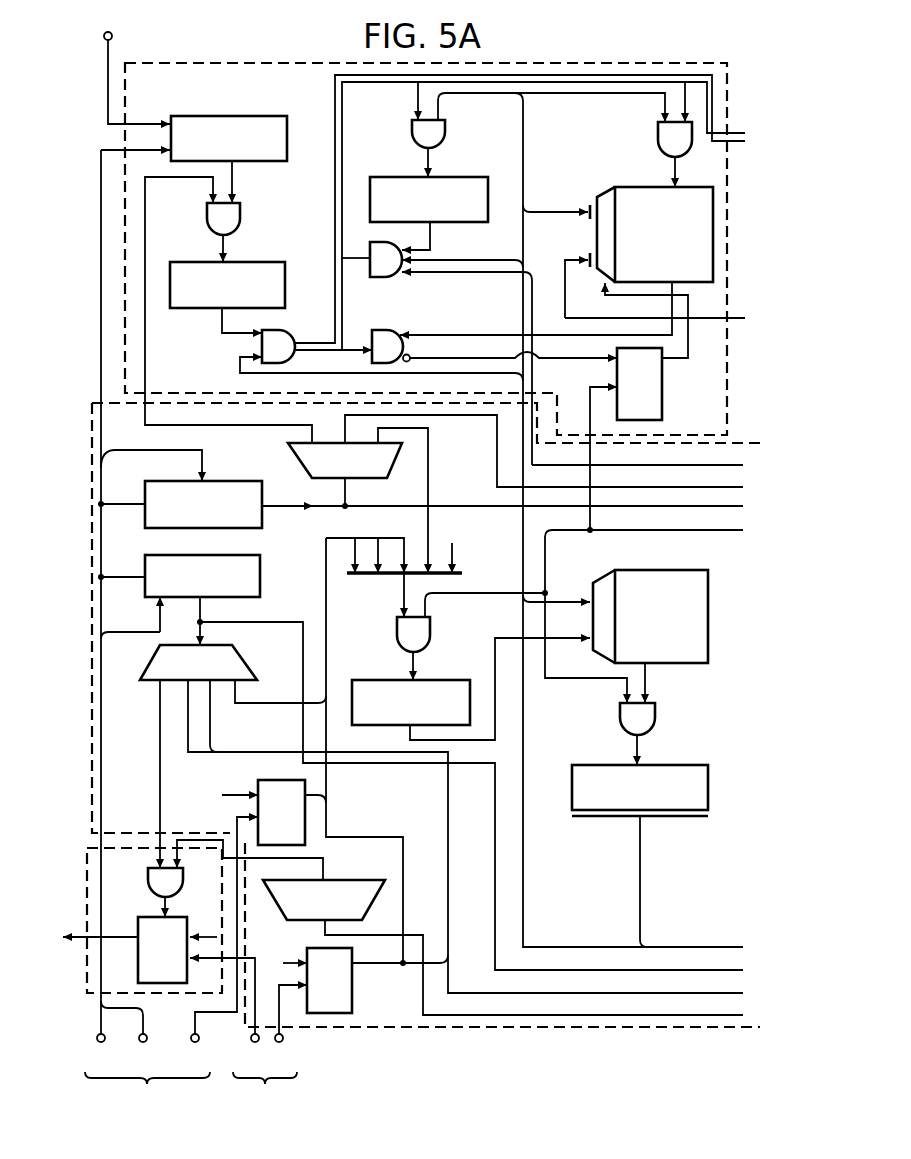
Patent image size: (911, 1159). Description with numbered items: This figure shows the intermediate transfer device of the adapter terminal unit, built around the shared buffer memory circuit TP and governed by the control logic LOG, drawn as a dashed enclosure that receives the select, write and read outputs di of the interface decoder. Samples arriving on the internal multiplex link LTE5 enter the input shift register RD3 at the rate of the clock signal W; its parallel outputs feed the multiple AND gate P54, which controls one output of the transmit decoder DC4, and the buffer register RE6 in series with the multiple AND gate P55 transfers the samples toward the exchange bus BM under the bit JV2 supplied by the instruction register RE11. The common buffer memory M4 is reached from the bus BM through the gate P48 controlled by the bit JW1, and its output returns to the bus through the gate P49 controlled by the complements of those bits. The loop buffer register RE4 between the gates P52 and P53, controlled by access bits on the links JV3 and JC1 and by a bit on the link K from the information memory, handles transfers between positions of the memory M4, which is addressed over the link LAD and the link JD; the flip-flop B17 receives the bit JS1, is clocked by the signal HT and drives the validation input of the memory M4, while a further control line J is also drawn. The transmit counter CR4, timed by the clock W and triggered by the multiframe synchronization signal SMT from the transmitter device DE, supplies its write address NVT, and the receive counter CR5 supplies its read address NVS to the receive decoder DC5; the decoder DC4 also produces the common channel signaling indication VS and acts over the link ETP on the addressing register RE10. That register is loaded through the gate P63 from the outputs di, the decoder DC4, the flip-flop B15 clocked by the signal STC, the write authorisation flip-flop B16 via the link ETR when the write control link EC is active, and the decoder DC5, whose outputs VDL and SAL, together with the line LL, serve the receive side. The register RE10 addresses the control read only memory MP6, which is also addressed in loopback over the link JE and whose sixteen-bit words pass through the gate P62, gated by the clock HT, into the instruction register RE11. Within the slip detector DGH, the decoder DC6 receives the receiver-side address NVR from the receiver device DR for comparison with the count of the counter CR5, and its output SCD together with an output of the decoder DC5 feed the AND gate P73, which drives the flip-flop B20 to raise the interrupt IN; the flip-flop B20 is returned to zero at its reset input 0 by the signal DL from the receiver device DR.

The shared buffer memory circuit TP is at (260, 70).
The control logic LOG is at (530, 1027).
The transmitter device DE is at (153, 975).
The receiver device DR is at (265, 1087).
The internal multiplex link LTE5 is at (127, 65).
The clock signal W is at (115, 575).
The input shift register RD3 is at (223, 123).
The multiple AND gate P54 is at (237, 217).
The buffer register RE6 is at (250, 268).
The multiple AND gate P55 is at (282, 340).
The control bit JV2 is at (240, 372).
The exchange bus BM is at (762, 139).
The multiple AND gate P53 is at (413, 132).
The access bit link JC1 is at (463, 97).
The signal line J is at (637, 527).
The access bit link JW1 is at (581, 95).
The gate P48 is at (665, 131).
The loop buffer register RE4 is at (402, 185).
The multiple AND gate P52 is at (388, 262).
The access bit link JV3 is at (467, 257).
The control bit link K is at (474, 276).
The addressing link JD is at (565, 175).
The common buffer memory M4 is at (628, 196).
The address link LAD is at (675, 297).
The gate P49 is at (393, 337).
The flip-flop B17 is at (656, 399).
The validation bit JS1 is at (578, 360).
The common channel signaling indication VS is at (559, 458).
The clock signal HT is at (658, 611).
The transmit count value NVT is at (307, 523).
The transmit counter CR4 is at (157, 488).
The multiframe synchronization signal SMT is at (205, 458).
The transmit decoder DC4 is at (372, 462).
The signal line ETP is at (430, 467).
The decoder outputs di is at (450, 544).
The receive counter CR5 is at (255, 577).
The receive count value NVS is at (252, 626).
The receive decoder DC5 is at (152, 668).
The signal line VDL is at (213, 745).
The signal line LL is at (759, 996).
The least significant binary signal SAL is at (210, 754).
The flip-flop B15 is at (270, 782).
The clock signal STC is at (218, 944).
The decoder output SCD is at (207, 835).
The AND gate P73 is at (157, 883).
The flip-flop B20 is at (148, 917).
The interrupt IN is at (100, 923).
The zero input 0 is at (203, 929).
The reset signal DL is at (224, 1015).
The write control link EC is at (288, 1028).
The slip detector circuit DGH is at (200, 977).
The decoder DC6 is at (343, 878).
The signal line NVR is at (766, 1018).
The write authorisation flip-flop B16 is at (350, 1002).
The write authorisation link ETR is at (360, 963).
The multiple AND gate P63 is at (401, 632).
The addressing register RE10 is at (435, 695).
The loopback address link JE is at (568, 598).
The control read only memory MP6 is at (673, 582).
The multiple AND gate P62 is at (653, 722).
The instruction buffer register RE11 is at (592, 770).